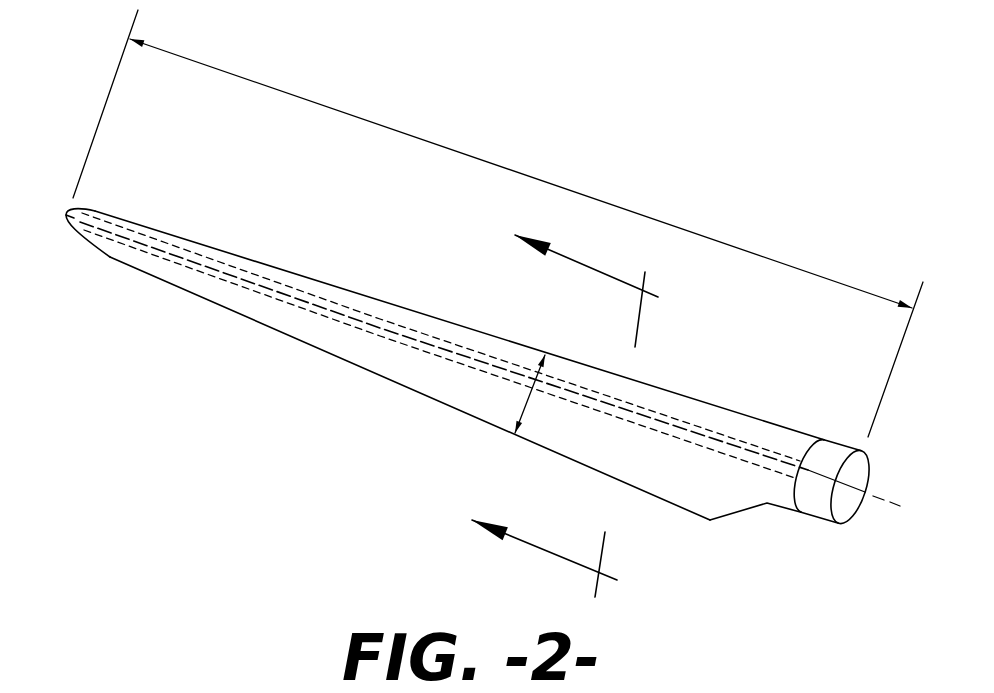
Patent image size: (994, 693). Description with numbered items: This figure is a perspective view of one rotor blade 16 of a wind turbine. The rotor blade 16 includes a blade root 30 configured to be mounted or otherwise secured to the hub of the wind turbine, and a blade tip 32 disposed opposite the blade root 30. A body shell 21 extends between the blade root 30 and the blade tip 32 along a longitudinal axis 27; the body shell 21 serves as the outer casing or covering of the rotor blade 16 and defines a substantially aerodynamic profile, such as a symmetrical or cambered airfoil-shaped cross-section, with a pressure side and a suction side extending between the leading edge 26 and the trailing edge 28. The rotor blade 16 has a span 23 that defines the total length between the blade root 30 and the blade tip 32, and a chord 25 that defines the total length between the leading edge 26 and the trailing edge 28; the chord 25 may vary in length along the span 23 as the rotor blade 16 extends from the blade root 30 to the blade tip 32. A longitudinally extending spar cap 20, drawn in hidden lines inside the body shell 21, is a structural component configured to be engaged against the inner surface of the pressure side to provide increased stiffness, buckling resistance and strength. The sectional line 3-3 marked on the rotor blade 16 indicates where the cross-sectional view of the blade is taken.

The rotor blade 16 is at (780, 170).
The spar cap 20 is at (412, 343).
The body shell 21 is at (320, 327).
The span 23 is at (413, 133).
The chord 25 is at (523, 390).
The leading edge 26 is at (693, 397).
The longitudinal axis 27 is at (68, 214).
The trailing edge 28 is at (673, 503).
The blade root 30 is at (820, 503).
The blade tip 32 is at (67, 211).
The sectional line 3- 3 is at (559, 394).